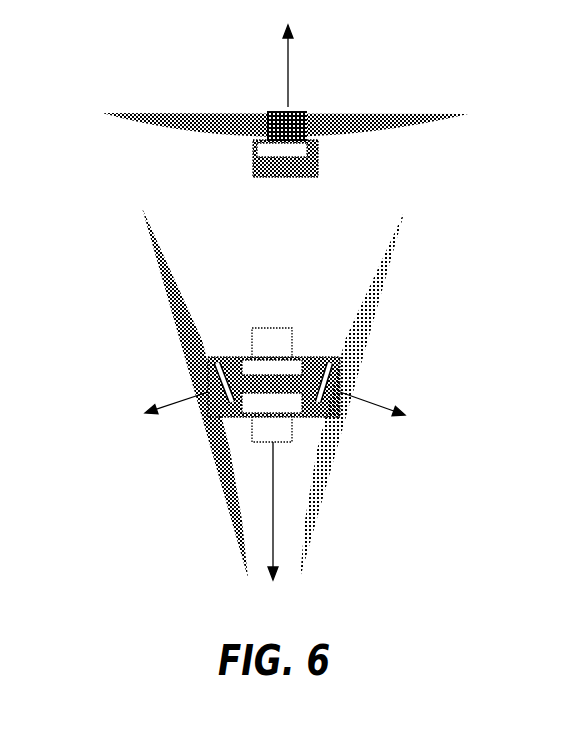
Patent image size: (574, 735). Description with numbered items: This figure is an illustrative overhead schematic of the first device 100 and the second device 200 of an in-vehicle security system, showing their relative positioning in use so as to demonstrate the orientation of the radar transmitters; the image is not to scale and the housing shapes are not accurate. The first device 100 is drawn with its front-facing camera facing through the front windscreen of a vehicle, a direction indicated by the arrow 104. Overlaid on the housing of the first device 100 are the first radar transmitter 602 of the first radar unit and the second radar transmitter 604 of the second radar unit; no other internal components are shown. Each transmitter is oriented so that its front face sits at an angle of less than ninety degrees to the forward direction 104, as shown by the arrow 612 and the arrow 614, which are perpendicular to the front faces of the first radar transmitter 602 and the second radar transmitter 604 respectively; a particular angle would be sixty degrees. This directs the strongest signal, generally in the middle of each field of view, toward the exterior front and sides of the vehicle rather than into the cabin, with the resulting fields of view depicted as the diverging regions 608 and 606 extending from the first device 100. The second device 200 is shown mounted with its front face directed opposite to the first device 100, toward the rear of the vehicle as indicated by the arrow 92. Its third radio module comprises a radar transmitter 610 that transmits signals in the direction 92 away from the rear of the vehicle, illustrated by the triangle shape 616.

The arrow 92 is at (265, 66).
The triangle shape 616 is at (373, 122).
The radar transmitter 610 is at (303, 145).
The second device 200 is at (253, 160).
The first device 100 is at (207, 384).
The first radar transmitter 602 is at (219, 360).
The second radar transmitter 604 is at (326, 360).
The arrow 612 is at (155, 417).
The arrow 614 is at (395, 415).
The left light beam 608 is at (218, 442).
The right light beam 606 is at (323, 468).
The arrow 104 is at (277, 532).